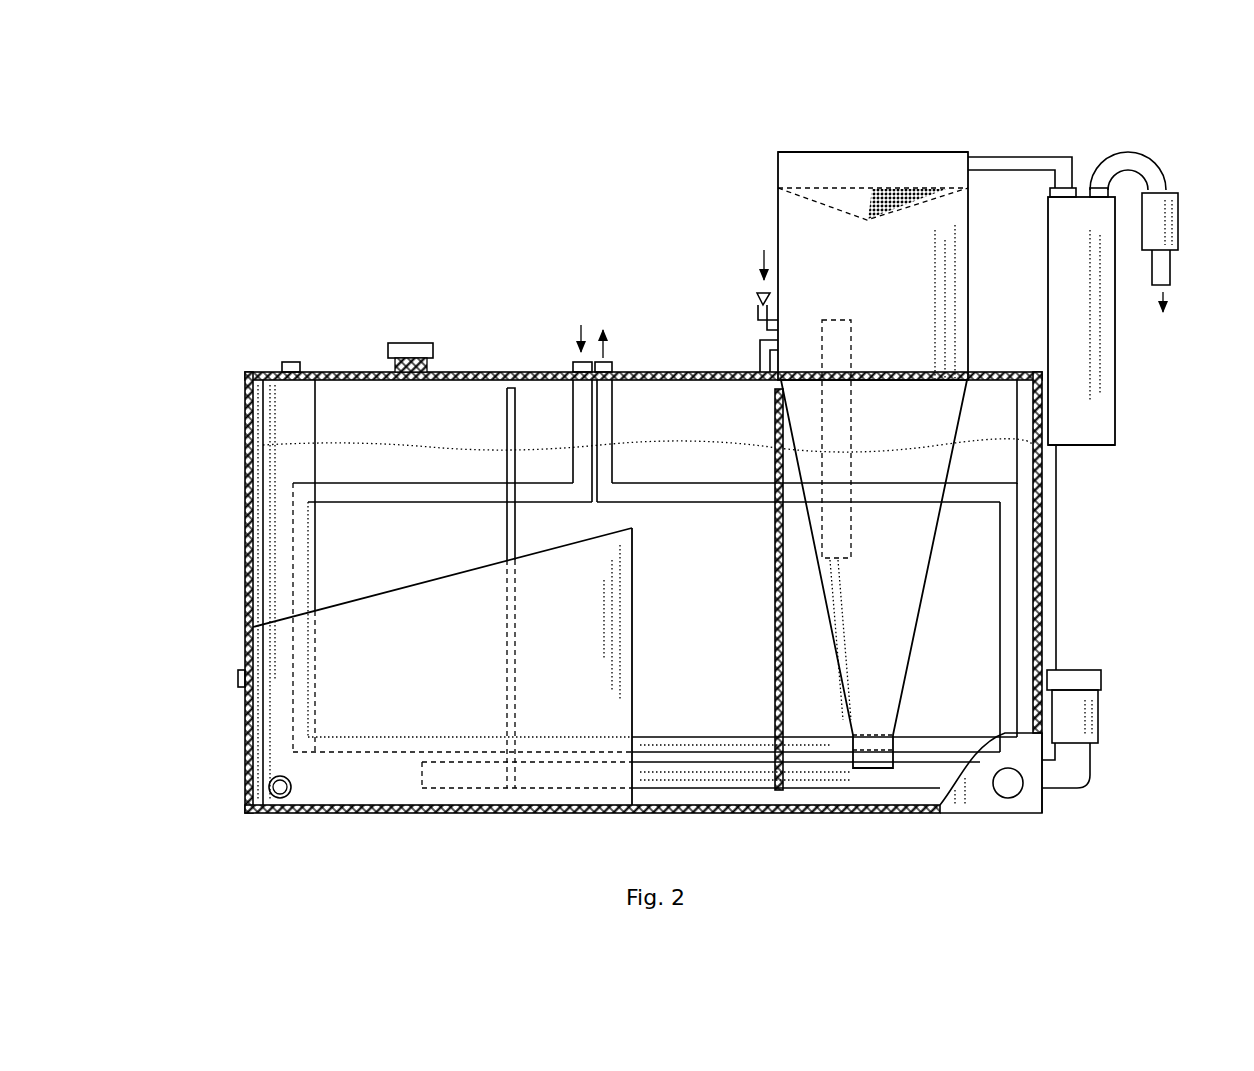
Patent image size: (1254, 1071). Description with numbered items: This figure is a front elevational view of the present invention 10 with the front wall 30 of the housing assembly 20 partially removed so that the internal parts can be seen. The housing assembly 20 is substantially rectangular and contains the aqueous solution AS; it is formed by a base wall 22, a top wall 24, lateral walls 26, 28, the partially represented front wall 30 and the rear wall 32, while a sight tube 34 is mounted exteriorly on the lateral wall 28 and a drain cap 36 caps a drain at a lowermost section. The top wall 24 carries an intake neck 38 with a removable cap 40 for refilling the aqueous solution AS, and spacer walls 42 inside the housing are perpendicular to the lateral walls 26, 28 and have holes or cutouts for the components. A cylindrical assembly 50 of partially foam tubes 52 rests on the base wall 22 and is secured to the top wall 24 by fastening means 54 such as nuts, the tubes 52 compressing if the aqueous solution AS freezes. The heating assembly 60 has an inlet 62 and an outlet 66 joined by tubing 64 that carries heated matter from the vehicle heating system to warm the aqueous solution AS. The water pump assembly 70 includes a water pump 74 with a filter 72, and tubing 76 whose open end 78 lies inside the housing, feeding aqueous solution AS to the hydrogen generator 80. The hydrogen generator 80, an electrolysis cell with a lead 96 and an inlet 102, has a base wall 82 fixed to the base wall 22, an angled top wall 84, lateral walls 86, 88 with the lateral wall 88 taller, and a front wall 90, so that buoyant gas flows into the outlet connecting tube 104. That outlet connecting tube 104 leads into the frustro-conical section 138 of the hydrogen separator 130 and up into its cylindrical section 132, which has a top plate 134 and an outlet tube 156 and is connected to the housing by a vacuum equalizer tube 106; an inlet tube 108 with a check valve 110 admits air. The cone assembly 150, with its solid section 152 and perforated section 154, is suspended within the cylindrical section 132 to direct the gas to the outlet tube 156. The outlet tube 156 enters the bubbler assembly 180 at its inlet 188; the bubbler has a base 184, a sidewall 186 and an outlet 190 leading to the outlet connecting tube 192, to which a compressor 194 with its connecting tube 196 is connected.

The present invention 10 is at (222, 185).
The housing assembly 20 is at (255, 368).
The base wall 22 is at (440, 813).
The top wall 24 is at (353, 372).
The lateral wall 26 is at (245, 705).
The lateral wall 28 is at (1043, 578).
The front wall 30 is at (1012, 803).
The rear wall 32 is at (353, 566).
The sight tube 34 is at (1050, 518).
The drain cap 36 is at (1018, 785).
The intake neck 38 is at (430, 370).
The removable cap 40 is at (408, 343).
The spacer walls 42 is at (507, 417).
The cylindrical assembly 50 is at (258, 497).
The tubes 52 is at (295, 408).
The fastening means 54 is at (290, 362).
The heating assembly 60 is at (568, 365).
The inlet 62 is at (575, 362).
The tubing 64 is at (698, 743).
The outlet 66 is at (613, 362).
The water pump assembly 70 is at (1106, 734).
The filter 72 is at (1087, 668).
The water pump 74 is at (1100, 700).
The tubing 76 is at (917, 777).
The open end 78 is at (422, 775).
The hydrogen generator 80 is at (414, 578).
The base wall 82 is at (508, 810).
The top wall 84 is at (373, 598).
The lateral wall 86 is at (247, 753).
The lateral wall 88 is at (633, 613).
The front wall 90 is at (473, 655).
The lead 96 is at (238, 680).
The inlet 102 is at (268, 780).
The outlet connecting tube 104 is at (748, 545).
The vacuum equalizer tube 106 is at (762, 352).
The inlet tube 108 is at (756, 322).
The check valve 110 is at (760, 298).
The hydrogen separator 130 is at (772, 160).
The cylindrical section 132 is at (873, 285).
The top plate 134 is at (808, 152).
The frustro-conical section 138 is at (874, 544).
The cone assembly 150 is at (772, 188).
The solid section 152 is at (825, 205).
The perforated section 154 is at (923, 205).
The outlet tube 156 is at (990, 157).
The bubbler assembly 180 is at (1106, 157).
The base 184 is at (1082, 447).
The sidewall 186 is at (1113, 417).
The inlet 188 is at (1062, 188).
The outlet 190 is at (1098, 197).
The outlet connecting tube 192 is at (1153, 172).
The compressor 194 is at (1178, 215).
The connecting tube 196 is at (1165, 277).
The aqueous solution AS is at (345, 472).